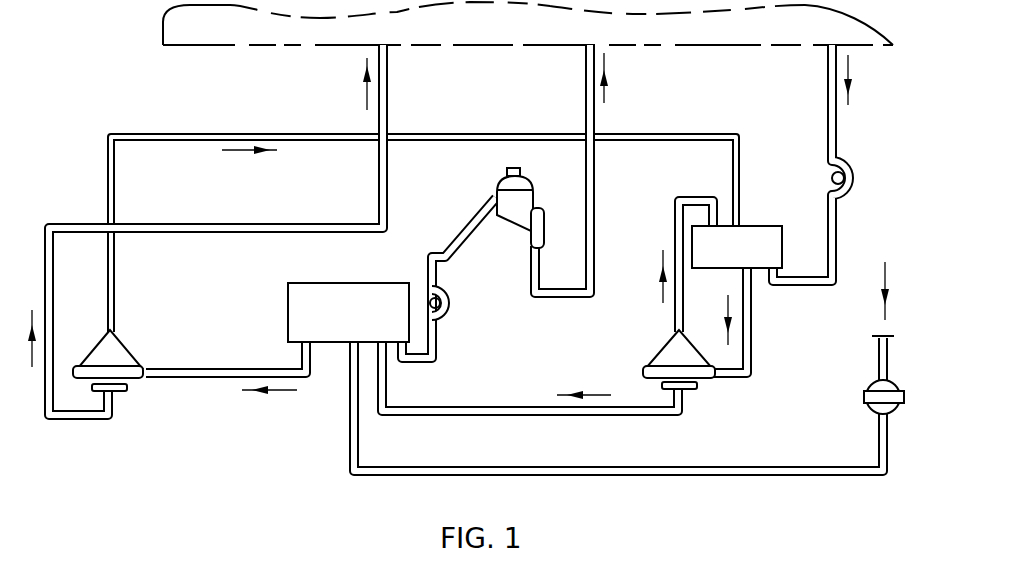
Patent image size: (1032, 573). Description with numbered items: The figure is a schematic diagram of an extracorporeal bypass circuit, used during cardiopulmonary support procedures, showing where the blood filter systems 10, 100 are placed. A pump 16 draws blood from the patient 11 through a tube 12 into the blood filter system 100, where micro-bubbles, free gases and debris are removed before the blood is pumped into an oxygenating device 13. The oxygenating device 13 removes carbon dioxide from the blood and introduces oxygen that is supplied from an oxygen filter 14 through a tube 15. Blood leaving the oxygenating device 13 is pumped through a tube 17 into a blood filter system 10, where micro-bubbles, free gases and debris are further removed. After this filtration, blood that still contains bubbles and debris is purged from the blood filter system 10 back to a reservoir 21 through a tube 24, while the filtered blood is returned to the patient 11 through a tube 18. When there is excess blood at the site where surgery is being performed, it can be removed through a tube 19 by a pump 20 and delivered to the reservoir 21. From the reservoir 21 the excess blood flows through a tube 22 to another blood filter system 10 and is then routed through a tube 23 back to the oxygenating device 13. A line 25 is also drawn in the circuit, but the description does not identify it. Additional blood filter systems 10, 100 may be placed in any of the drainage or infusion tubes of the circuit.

The blood filter system 10 is at (137, 337).
The patient 11 is at (250, 47).
The tube 12 is at (583, 113).
The oxygenating device 13 is at (328, 297).
The oxygen filter 14 is at (864, 397).
The tube 15 is at (664, 464).
The pump 16 is at (450, 306).
The tube 17 is at (165, 383).
The tube 18 is at (228, 224).
The tube 19 is at (840, 226).
The pump 20 is at (831, 182).
The reservoir 21 is at (748, 243).
The tube 22 is at (755, 332).
The tube 23 is at (538, 417).
The tube 24 is at (160, 134).
The line 25 is at (673, 216).
The blood filter system 100 is at (498, 180).